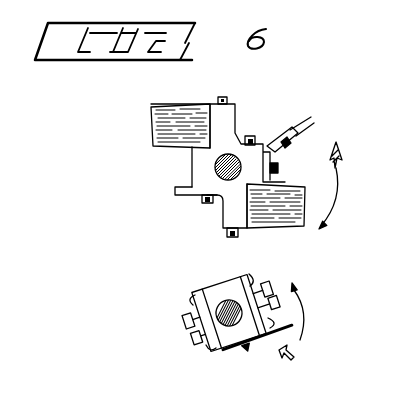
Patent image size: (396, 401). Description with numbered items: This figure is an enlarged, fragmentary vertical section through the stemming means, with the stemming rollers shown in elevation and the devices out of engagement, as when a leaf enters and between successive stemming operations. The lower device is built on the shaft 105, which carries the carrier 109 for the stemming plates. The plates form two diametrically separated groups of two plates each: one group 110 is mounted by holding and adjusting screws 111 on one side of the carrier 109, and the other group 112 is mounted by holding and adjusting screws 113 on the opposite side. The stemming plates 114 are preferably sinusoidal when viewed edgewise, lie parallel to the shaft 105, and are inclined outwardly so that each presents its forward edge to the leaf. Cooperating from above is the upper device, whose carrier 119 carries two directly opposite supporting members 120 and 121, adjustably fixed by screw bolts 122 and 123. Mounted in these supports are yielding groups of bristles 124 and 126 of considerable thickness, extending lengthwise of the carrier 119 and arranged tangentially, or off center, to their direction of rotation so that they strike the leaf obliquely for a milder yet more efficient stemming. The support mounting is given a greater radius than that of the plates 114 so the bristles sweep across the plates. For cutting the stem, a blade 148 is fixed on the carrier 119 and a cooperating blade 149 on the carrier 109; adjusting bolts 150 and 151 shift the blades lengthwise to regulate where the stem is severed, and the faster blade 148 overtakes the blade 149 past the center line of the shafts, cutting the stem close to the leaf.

The shaft 105 is at (225, 300).
The carrier 109 is at (231, 338).
The group of stemming plates 110 is at (217, 169).
The holding and adjusting screws 111 is at (189, 300).
The group of stemming plates 112 is at (260, 280).
The holding and adjusting screws 113 is at (252, 275).
The stemming plates 114 is at (276, 286).
The carrier 119 is at (203, 180).
The supporting member 120 is at (237, 113).
The supporting member 121 is at (226, 220).
The screw bolt 122 is at (250, 135).
The screw bolt 123 is at (202, 202).
The group of bristles 124 is at (150, 117).
The group of bristles 126 is at (294, 192).
The blade 148 is at (307, 116).
The blade 149 is at (297, 351).
The adjusting bolt 150 is at (303, 143).
The adjusting bolt 151 is at (249, 352).